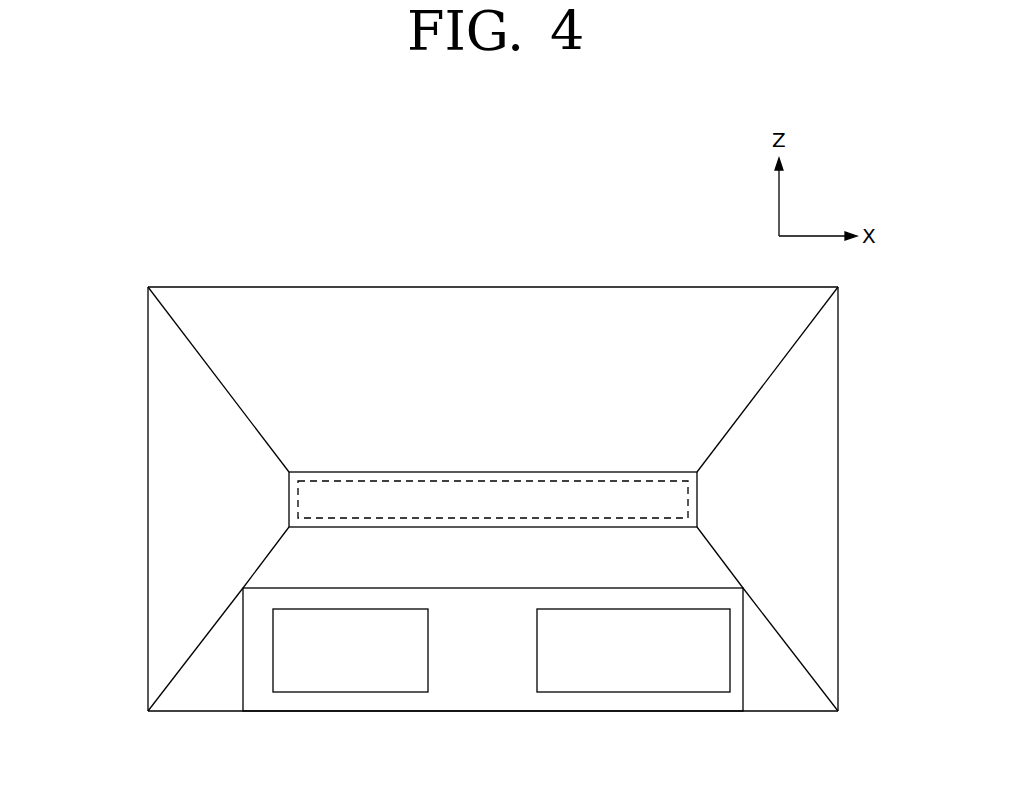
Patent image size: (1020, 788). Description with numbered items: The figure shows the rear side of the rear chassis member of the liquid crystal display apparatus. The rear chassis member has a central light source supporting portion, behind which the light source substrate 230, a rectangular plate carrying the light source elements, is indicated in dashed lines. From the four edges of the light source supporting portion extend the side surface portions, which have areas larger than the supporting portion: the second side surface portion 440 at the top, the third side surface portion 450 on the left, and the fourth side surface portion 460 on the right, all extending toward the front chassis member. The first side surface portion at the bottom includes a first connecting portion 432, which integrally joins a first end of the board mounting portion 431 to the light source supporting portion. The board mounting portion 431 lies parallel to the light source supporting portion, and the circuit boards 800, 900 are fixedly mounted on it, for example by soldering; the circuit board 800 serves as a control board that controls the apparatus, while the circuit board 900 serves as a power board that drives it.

The light source substrate 230 is at (371, 493).
The second side surface portion 440 is at (537, 300).
The third side surface portion 450 is at (155, 468).
The fourth side surface portion 460 is at (830, 460).
The board mounting portion 431 is at (488, 703).
The first connecting portion 432 is at (440, 570).
The circuit board 800 is at (572, 683).
The circuit board 900 is at (376, 683).